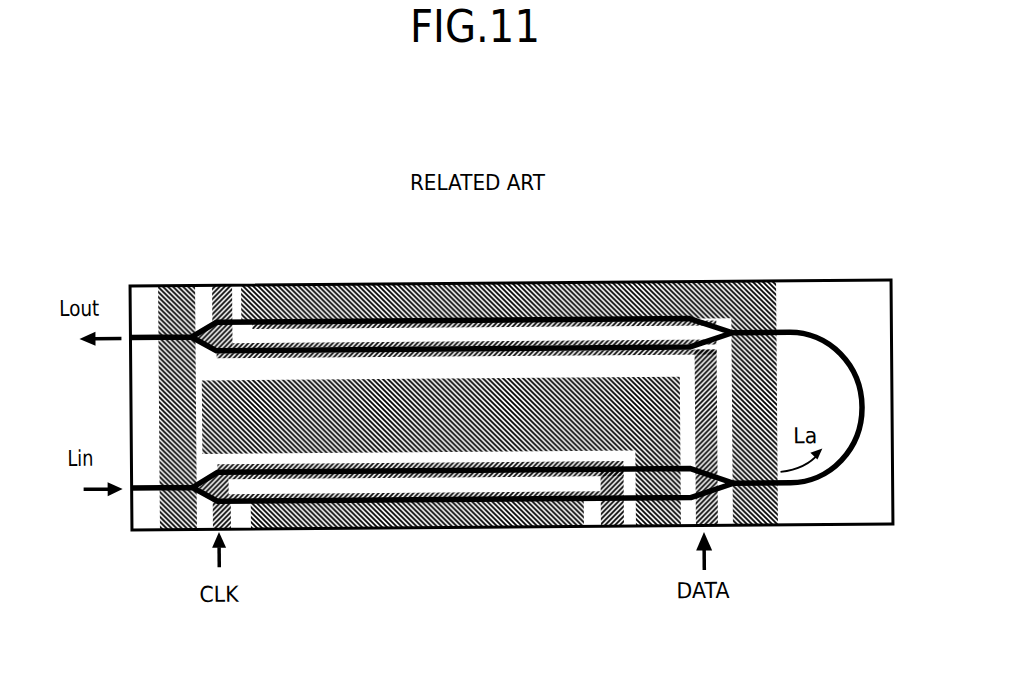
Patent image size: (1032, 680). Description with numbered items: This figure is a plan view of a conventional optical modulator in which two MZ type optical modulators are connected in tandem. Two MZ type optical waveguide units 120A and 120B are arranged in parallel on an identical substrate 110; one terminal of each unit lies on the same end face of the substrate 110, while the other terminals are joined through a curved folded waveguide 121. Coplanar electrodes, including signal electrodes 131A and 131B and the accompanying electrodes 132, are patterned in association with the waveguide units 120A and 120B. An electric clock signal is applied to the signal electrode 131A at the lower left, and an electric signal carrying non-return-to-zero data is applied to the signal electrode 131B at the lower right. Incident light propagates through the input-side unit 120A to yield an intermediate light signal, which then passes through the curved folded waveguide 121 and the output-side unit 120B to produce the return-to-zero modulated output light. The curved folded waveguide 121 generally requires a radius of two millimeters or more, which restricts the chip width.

The substrate 110 is at (812, 529).
The MZ type optical waveguide unit 120A is at (395, 527).
The MZ type optical waveguide unit 120B is at (622, 308).
The curved folded waveguide 121 is at (822, 335).
The signal electrode 131A is at (293, 475).
The signal electrode 131B is at (372, 341).
The ground electrode 132 is at (508, 288).